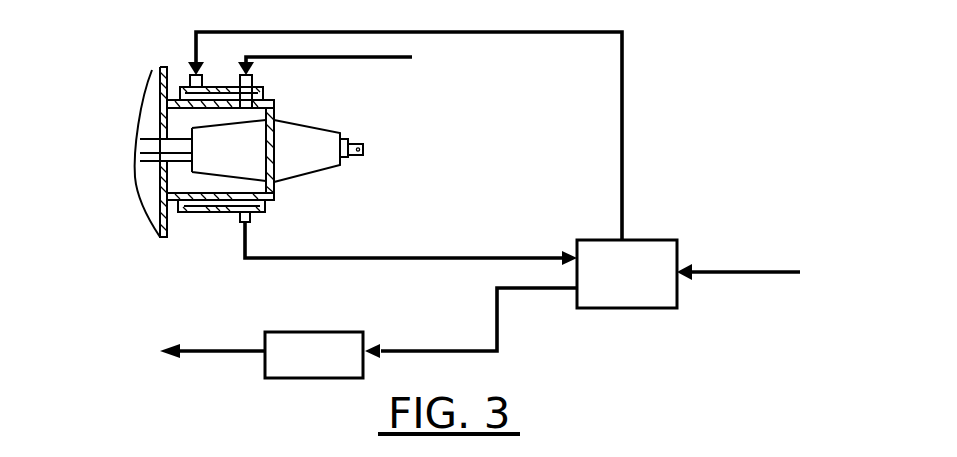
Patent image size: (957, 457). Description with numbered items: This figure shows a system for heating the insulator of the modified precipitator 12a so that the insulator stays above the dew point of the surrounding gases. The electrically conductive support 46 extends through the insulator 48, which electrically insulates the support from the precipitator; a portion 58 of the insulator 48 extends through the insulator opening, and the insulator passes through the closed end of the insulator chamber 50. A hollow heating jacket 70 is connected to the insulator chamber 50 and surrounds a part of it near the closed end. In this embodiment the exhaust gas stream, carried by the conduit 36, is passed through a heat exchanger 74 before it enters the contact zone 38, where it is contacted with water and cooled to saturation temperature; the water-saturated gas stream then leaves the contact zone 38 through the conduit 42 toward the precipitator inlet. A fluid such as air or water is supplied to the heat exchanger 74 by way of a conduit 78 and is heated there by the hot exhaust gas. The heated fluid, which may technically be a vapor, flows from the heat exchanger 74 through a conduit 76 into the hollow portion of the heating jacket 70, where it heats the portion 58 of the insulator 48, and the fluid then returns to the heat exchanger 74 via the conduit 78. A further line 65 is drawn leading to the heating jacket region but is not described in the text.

The modified precipitator 12a is at (156, 64).
The insulator chamber 50 is at (177, 86).
The hollow heating jacket 70 is at (215, 213).
The electrically conductive support 46 is at (157, 152).
The portion of the insulator 58 is at (222, 155).
The insulator 48 is at (310, 150).
The conduit 76 is at (270, 32).
The supply line 65 is at (367, 59).
The conduit 78 is at (413, 257).
The heat exchanger 74 is at (648, 316).
The conduit 36 is at (722, 272).
The contact zone 38 is at (319, 328).
The conduit 42 is at (195, 350).